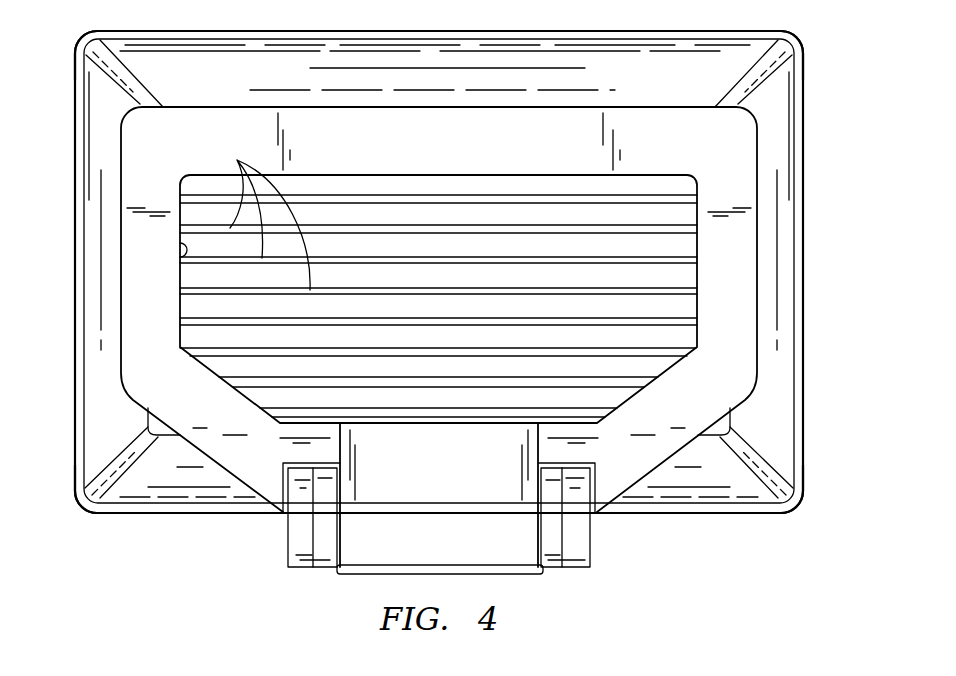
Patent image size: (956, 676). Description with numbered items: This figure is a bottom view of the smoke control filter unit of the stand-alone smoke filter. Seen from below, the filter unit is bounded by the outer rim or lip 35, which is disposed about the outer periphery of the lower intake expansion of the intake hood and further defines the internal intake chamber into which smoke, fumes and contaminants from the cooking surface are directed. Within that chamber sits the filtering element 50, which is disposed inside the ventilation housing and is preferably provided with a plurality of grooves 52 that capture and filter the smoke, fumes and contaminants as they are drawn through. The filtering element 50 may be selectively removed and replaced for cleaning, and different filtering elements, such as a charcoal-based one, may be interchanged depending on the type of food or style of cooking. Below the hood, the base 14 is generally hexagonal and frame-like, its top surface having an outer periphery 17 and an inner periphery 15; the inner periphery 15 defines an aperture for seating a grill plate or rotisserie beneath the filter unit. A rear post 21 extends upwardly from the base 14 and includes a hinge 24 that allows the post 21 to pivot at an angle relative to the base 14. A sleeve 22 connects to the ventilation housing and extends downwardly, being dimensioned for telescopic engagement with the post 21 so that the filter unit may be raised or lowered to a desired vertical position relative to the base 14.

The base 14 is at (116, 154).
The outer periphery 17 is at (120, 290).
The inner periphery 15 is at (183, 256).
The filtering element 50 is at (452, 287).
The grooves 52 is at (253, 218).
The rear post 21 is at (455, 534).
The sleeve 22 is at (530, 574).
The hinge 24 is at (300, 540).
The outer rim or lip 35 is at (793, 36).